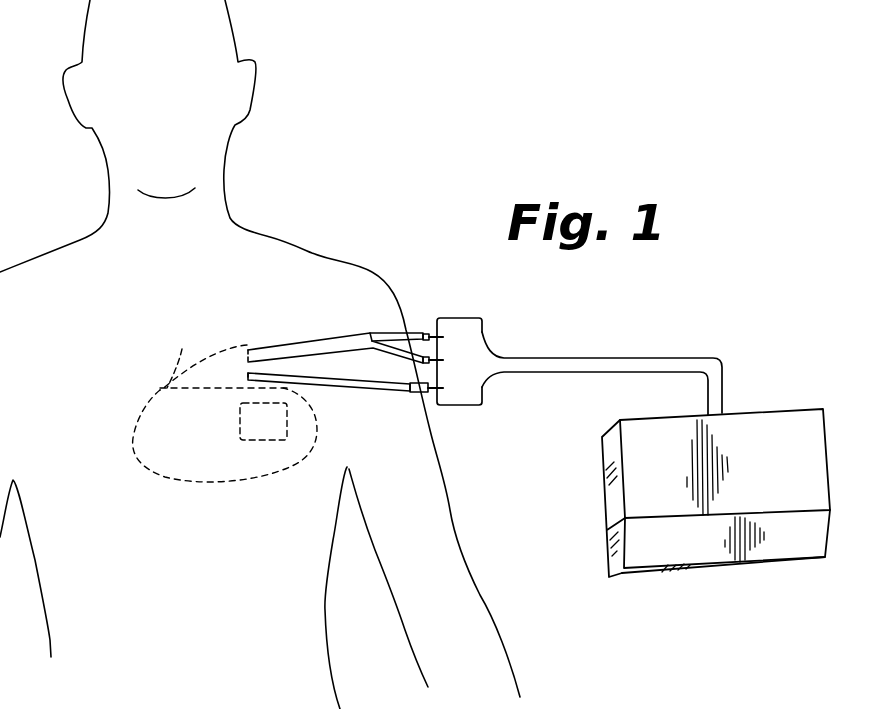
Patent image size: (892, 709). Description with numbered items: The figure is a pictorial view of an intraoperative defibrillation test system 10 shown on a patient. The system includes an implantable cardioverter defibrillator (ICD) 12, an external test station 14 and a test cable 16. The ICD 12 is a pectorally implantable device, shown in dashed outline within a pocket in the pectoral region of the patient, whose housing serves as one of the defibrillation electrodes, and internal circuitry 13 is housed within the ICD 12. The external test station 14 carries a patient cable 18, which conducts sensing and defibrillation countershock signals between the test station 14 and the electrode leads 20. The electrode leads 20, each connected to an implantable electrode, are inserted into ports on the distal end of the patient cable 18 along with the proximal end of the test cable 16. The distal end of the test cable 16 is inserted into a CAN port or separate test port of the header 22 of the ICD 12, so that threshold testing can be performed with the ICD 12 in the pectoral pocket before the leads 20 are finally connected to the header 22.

The intraoperative defibrillation test system 10 is at (592, 321).
The implantable cardioverter defibrillator 12 is at (225, 485).
The internal circuitry 13 is at (287, 428).
The external test station 14 is at (713, 568).
The test cable 16 is at (335, 384).
The patient cable 18 is at (643, 358).
The electrode lead 20 is at (326, 343).
The header 22 is at (182, 349).